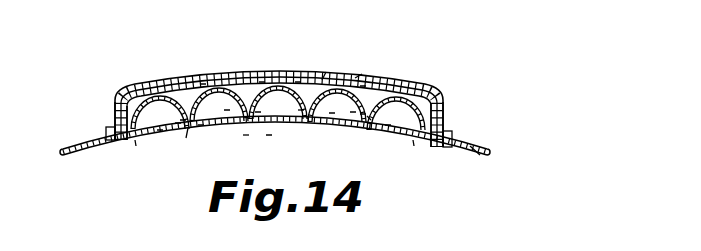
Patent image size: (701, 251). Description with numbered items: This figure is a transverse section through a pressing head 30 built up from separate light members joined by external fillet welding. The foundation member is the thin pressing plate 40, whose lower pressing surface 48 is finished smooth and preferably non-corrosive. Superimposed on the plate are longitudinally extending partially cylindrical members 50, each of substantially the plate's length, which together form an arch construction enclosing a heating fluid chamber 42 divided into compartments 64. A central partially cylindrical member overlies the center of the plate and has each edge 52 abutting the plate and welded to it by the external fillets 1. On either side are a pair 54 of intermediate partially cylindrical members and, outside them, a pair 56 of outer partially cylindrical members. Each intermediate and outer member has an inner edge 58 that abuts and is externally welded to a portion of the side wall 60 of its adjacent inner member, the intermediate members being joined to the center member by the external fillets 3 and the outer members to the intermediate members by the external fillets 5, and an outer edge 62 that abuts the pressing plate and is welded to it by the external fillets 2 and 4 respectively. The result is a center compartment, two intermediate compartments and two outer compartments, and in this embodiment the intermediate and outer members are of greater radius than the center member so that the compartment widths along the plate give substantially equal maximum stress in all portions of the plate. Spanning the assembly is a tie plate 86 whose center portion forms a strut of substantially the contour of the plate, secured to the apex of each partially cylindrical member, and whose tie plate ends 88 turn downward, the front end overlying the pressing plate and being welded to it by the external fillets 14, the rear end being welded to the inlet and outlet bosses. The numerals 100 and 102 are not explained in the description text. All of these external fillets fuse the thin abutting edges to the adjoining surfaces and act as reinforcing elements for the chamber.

The external fillet 1 is at (301, 110).
The external fillet 2 is at (179, 123).
The external fillet 3 is at (262, 80).
The external fillet 4 is at (122, 140).
The external fillet 5 is at (203, 82).
The external fillet 14 is at (438, 122).
The pressing head 30 is at (450, 75).
The pressing plate 40 is at (486, 152).
The heating fluid chamber 42 is at (357, 77).
The pressing surface 48 is at (466, 154).
The partially cylindrical member 50 is at (175, 82).
The edge 52 is at (246, 135).
The pair of intermediate partially cylindrical members 54 is at (217, 75).
The pair of outer partially cylindrical members 56 is at (171, 80).
The inner edge 58 is at (193, 77).
The side wall 60 is at (201, 125).
The outer edge 62 is at (184, 120).
The compartment 64 is at (160, 130).
The tie plate 86 is at (141, 88).
The tie plate end 88 is at (118, 117).
The inner shell layer 100 is at (122, 92).
The shell hatch 102 is at (116, 98).